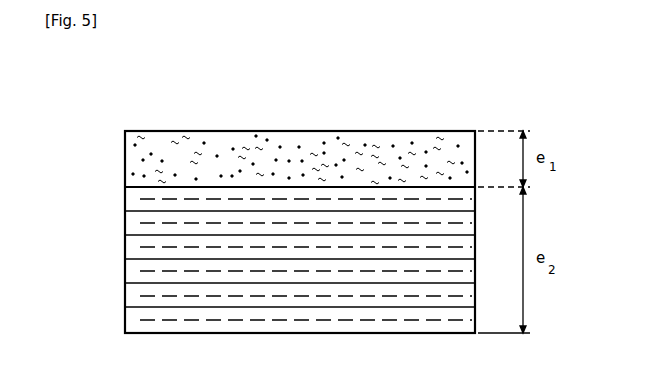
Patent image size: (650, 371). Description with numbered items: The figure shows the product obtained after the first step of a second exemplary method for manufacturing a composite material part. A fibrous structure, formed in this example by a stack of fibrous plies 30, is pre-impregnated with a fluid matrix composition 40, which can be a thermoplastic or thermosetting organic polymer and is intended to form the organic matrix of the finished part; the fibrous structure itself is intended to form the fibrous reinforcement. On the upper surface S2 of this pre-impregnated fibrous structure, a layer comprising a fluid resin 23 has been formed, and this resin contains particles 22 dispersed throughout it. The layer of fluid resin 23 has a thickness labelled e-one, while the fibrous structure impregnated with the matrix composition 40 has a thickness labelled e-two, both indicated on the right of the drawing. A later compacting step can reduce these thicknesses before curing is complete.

The particles 22 is at (343, 143).
The fluid resin 23 is at (267, 152).
The surface S2 is at (210, 187).
The matrix composition 40 is at (148, 247).
The fibrous plies 30 is at (131, 308).